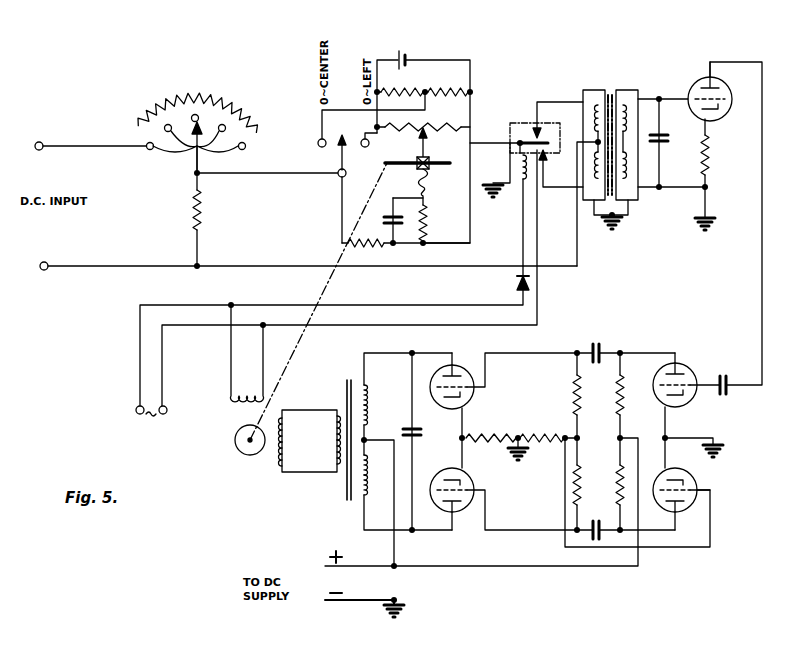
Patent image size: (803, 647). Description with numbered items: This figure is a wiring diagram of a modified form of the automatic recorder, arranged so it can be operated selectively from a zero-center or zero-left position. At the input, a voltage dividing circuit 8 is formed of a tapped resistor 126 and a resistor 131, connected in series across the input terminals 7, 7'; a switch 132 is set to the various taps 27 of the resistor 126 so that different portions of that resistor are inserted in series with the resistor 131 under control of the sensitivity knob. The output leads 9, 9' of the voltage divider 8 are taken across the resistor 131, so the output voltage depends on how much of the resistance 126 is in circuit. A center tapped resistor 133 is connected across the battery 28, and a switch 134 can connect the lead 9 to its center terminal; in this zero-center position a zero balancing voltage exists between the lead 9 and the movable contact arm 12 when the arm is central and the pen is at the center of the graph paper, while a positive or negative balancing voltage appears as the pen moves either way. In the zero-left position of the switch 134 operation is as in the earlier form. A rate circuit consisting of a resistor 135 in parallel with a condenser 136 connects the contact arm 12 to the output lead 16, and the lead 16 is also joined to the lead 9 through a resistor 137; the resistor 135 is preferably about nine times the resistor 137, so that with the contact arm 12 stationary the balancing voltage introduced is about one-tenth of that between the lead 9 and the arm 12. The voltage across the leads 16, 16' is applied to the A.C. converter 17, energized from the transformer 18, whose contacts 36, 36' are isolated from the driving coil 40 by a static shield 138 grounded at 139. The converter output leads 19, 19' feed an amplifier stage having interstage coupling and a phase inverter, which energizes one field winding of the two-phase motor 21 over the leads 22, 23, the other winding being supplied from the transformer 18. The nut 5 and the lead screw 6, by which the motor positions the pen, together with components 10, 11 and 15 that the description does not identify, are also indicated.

The nut 5 is at (416, 166).
The lead screw 6 is at (431, 166).
The input terminal 7 is at (81, 133).
The input terminal 7' is at (30, 279).
The voltage dividing circuit 8 is at (166, 175).
The output lead 9 is at (271, 161).
The output lead 9' is at (312, 250).
The resistor 10 is at (442, 122).
The bridge network 11 is at (501, 81).
The movable contact arm 12 is at (428, 150).
The thermocouple unit 15 is at (427, 212).
The output lead 16 is at (494, 115).
The output lead 16' is at (334, 320).
The A. C. converter 17 is at (514, 125).
The transformer 18 is at (151, 424).
The output lead 19 is at (691, 98).
The output lead 19' is at (687, 182).
The two-phase alternating current motor 21 is at (248, 456).
The lead 22 is at (308, 410).
The lead 23 is at (316, 472).
The taps 27 is at (195, 148).
The battery 28 is at (412, 56).
The contact 36 is at (558, 120).
The contact 36' is at (561, 168).
The driving coil 40 is at (532, 207).
The tapped resistor 126 is at (212, 100).
The resistor 131 is at (205, 210).
The switch 132 is at (194, 162).
The center tapped resistor 133 is at (445, 88).
The switch 134 is at (345, 147).
The resistor 135 is at (428, 224).
The condenser 136 is at (384, 218).
The resistor 137 is at (376, 246).
The static shield 138 is at (508, 174).
The ground 139 is at (490, 205).